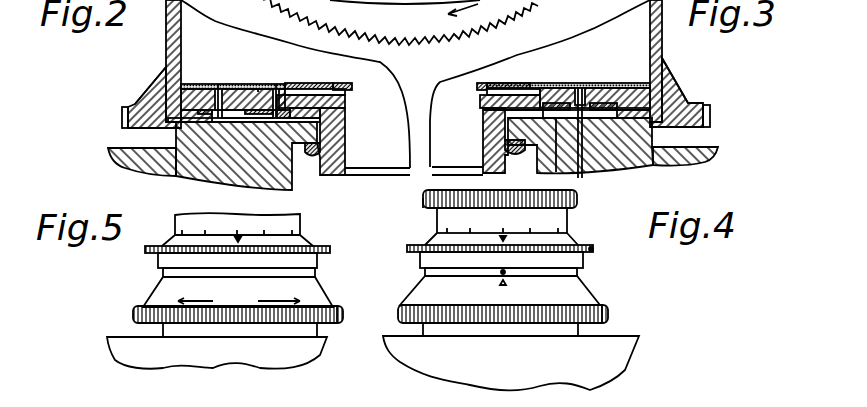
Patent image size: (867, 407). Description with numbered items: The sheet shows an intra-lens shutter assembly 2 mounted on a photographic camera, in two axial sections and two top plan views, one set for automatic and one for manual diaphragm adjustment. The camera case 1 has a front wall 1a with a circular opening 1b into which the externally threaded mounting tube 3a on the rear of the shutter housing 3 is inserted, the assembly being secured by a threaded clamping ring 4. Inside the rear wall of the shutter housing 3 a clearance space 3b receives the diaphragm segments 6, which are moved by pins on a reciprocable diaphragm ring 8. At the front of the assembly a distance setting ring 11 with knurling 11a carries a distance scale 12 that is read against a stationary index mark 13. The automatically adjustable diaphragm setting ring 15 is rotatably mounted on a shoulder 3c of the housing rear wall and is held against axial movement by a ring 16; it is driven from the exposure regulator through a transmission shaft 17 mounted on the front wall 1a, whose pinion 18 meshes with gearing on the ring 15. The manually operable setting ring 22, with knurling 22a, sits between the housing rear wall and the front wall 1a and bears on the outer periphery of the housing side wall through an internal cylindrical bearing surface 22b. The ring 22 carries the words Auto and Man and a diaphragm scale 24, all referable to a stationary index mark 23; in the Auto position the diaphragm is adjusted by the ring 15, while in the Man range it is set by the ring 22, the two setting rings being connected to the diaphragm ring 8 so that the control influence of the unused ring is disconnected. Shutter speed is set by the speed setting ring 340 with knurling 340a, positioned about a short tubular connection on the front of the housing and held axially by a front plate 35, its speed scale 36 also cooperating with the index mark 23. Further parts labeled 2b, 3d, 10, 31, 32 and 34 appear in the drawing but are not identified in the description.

In FIG. 5, the camera case 1 is at (230, 358).
In FIG. 4, the camera case 1 is at (603, 380).
In FIG. 2, the front wall 1a is at (140, 168).
In FIG. 3, the front wall 1a is at (672, 165).
In FIG. 2, the circular opening 1b is at (342, 135).
In FIG. 3, the circular opening 1b is at (505, 136).
In FIG. 5, the intra-lens shutter assembly 2 is at (126, 294).
In FIG. 2, the lens barrel gear rim 2b is at (463, 8).
In FIG. 2, the shutter housing 3 is at (166, 15).
In FIG. 3, the shutter housing 3 is at (662, 35).
In FIG. 2, the mounting tube 3a is at (345, 156).
In FIG. 3, the mounting tube 3a is at (483, 158).
In FIG. 2, the clearance space 3b is at (293, 95).
In FIG. 3, the clearance space 3b is at (530, 95).
In FIG. 2, the shoulder 3c is at (345, 120).
In FIG. 3, the shoulder 3c is at (483, 113).
In FIG. 2, the mount thin strip 3d is at (185, 108).
In FIG. 2, the clamping ring 4 is at (314, 158).
In FIG. 3, the clamping ring 4 is at (515, 158).
In FIG. 2, the diaphragm segments 6 is at (343, 84).
In FIG. 3, the diaphragm segments 6 is at (482, 84).
In FIG. 2, the diaphragm ring 8 is at (315, 86).
In FIG. 3, the diaphragm ring 8 is at (508, 86).
In FIG. 2, the coupling plate 10 is at (258, 88).
In FIG. 3, the coupling plate 10 is at (562, 88).
In FIG. 4, the distance setting ring 11 is at (438, 193).
In FIG. 4, the knurling 11a is at (425, 200).
In FIG. 5, the distance scale 12 is at (282, 223).
In FIG. 4, the distance scale 12 is at (530, 224).
In FIG. 5, the index mark 13 is at (239, 240).
In FIG. 4, the index mark 13 is at (500, 238).
In FIG. 2, the diaphragm setting ring 15 is at (255, 114).
In FIG. 3, the diaphragm setting ring 15 is at (607, 162).
In FIG. 2, the ring 16 is at (290, 117).
In FIG. 3, the ring 16 is at (556, 150).
In FIG. 3, the transmission shaft 17 is at (583, 177).
In FIG. 3, the pinion 18 is at (592, 101).
In FIG. 2, the manually operable setting ring 22 is at (140, 98).
In FIG. 3, the manually operable setting ring 22 is at (680, 92).
In FIG. 5, the manually operable setting ring 22 is at (337, 306).
In FIG. 4, the manually operable setting ring 22 is at (612, 312).
In FIG. 2, the knurling 22a is at (122, 124).
In FIG. 3, the knurling 22a is at (710, 115).
In FIG. 5, the knurling 22a is at (343, 314).
In FIG. 4, the knurling 22a is at (612, 318).
In FIG. 2, the internal cylindrical bearing surface 22b is at (156, 80).
In FIG. 3, the internal cylindrical bearing surface 22b is at (668, 78).
In FIG. 5, the index mark 23 is at (160, 278).
In FIG. 4, the index mark 23 is at (505, 272).
In FIG. 5, the diaphragm scale 24 is at (243, 288).
In FIG. 2, the contact strip 31 is at (232, 88).
In FIG. 2, the pin 32 is at (278, 92).
In FIG. 2, the pin 34 is at (216, 86).
In FIG. 5, the front plate 35 is at (170, 242).
In FIG. 4, the front plate 35 is at (420, 246).
In FIG. 5, the speed scale 36 is at (273, 258).
In FIG. 4, the speed scale 36 is at (465, 262).
In FIG. 5, the speed setting ring 340 is at (320, 250).
In FIG. 4, the speed setting ring 340 is at (422, 255).
In FIG. 5, the knurling 340a is at (152, 251).
In FIG. 4, the knurling 340a is at (593, 249).